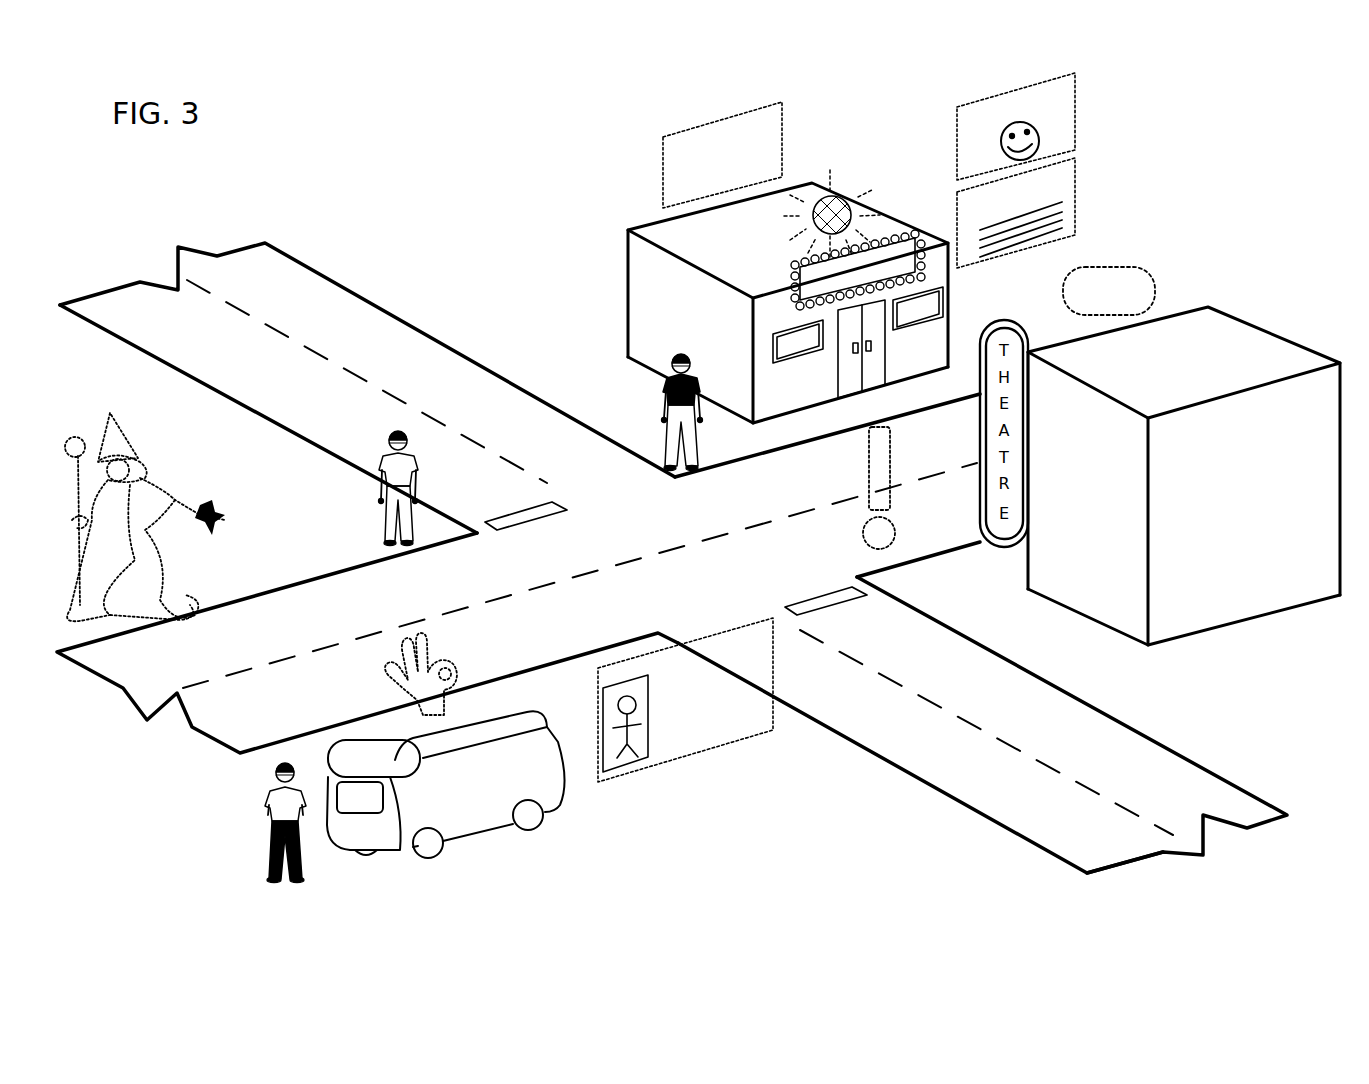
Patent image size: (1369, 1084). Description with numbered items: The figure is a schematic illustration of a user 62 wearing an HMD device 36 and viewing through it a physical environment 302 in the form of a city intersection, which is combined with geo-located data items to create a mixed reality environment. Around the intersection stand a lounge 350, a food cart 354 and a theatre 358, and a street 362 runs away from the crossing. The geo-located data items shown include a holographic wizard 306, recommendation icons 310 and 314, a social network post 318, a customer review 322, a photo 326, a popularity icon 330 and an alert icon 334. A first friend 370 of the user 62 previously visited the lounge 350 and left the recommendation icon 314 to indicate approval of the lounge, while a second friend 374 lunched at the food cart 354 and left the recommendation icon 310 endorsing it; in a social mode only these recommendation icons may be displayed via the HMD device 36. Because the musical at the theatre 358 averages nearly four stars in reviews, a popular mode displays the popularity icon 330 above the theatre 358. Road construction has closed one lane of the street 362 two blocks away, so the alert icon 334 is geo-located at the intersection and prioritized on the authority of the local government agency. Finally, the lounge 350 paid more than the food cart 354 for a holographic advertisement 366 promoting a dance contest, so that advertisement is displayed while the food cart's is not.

The physical environment 302 is at (456, 226).
The holographic wizard 306 is at (142, 463).
The recommendation icon 310 is at (392, 685).
The recommendation icon 314 is at (835, 196).
The social network post 318 is at (695, 752).
The customer review 322 is at (1076, 204).
The photo 326 is at (957, 128).
The popularity icon 330 is at (1155, 292).
The alert icon 334 is at (869, 483).
The lounge 350 is at (647, 231).
The food cart 354 is at (472, 832).
The theatre 358 is at (1288, 340).
The street 362 is at (1168, 766).
The holographic advertisement 366 is at (663, 150).
The first friend 370 is at (268, 845).
The second friend 374 is at (665, 405).
The HMD device 36 is at (390, 441).
The user 62 is at (381, 500).